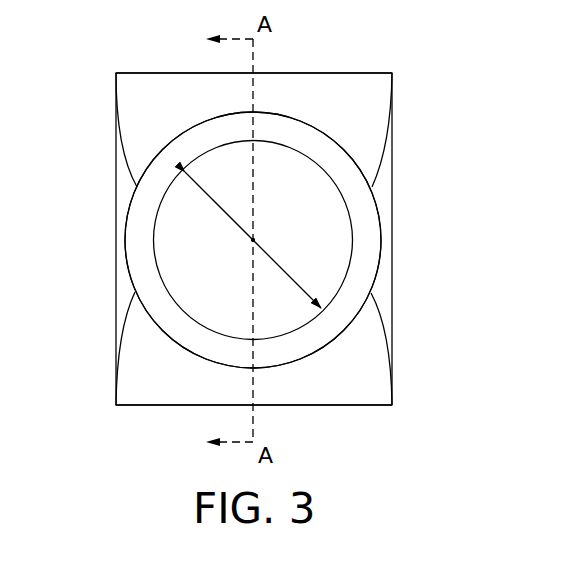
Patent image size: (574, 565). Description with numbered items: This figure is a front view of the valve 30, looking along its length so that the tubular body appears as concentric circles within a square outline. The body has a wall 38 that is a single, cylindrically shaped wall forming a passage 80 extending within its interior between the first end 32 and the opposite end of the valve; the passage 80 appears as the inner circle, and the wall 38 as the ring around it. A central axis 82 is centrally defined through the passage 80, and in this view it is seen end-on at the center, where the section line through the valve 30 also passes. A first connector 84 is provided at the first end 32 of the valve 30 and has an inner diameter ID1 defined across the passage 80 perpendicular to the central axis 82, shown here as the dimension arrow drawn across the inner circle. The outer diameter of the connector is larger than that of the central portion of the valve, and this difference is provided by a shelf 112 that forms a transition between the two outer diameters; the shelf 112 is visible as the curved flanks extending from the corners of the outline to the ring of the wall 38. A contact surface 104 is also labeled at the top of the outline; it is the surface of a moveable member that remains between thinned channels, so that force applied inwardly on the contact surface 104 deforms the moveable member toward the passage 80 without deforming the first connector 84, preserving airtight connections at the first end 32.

The valve 30 is at (430, 105).
The first end 32 is at (396, 411).
The wall 38 is at (362, 268).
The passage 80 is at (185, 288).
The central axis 82 is at (256, 234).
The first connector 84 is at (147, 253).
The contact surface 104 is at (328, 72).
The shelf 112 is at (382, 177).
The inner diameter ID1 is at (215, 198).